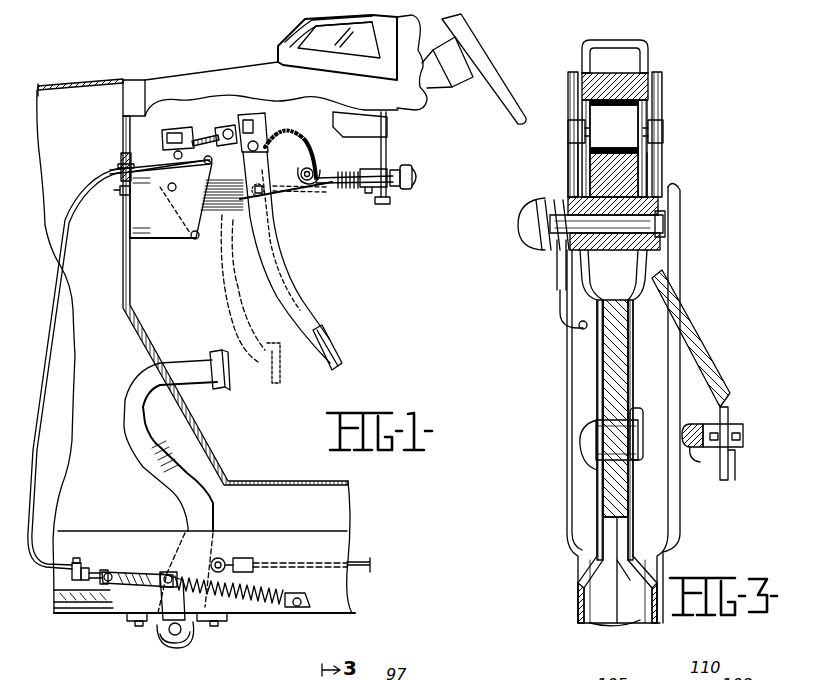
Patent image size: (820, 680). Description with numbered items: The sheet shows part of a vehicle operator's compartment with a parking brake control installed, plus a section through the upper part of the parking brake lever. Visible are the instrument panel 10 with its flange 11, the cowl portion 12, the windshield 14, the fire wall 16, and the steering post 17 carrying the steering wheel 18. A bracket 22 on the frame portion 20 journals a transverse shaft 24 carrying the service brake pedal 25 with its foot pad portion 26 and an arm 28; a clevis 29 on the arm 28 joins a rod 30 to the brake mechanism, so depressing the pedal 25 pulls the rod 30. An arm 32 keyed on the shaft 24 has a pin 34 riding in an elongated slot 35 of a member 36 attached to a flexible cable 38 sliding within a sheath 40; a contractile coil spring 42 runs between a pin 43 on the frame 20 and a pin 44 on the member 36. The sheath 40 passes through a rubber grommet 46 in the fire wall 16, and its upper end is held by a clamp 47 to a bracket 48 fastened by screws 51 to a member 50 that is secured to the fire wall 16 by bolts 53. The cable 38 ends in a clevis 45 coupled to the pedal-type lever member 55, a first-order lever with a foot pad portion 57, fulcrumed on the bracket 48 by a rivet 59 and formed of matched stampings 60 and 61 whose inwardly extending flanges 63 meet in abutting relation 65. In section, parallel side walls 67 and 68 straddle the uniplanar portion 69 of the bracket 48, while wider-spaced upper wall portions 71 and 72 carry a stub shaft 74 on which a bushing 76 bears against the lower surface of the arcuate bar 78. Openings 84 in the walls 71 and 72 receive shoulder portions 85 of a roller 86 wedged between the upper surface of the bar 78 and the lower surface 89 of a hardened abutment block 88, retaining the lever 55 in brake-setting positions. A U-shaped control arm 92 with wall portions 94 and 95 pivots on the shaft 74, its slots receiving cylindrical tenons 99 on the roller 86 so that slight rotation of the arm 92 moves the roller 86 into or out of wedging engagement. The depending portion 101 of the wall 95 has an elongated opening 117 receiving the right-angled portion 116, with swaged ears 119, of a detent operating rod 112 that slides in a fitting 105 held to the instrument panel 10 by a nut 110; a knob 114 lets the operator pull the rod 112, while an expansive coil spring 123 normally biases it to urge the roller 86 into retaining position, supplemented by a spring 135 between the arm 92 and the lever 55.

In FIG. 1, the instrument panel 10 is at (390, 199).
In FIG. 1, the flange 11 is at (384, 205).
In FIG. 1, the cowl portion 12 is at (228, 78).
In FIG. 1, the windshield 14 is at (305, 33).
In FIG. 1, the dashboard or fire wall 16 is at (130, 288).
In FIG. 1, the steering post 17 is at (428, 85).
In FIG. 1, the steering wheel 18 is at (468, 30).
In FIG. 1, the frame portion 20 is at (308, 531).
In FIG. 1, the bracket 22 is at (125, 613).
In FIG. 1, the shaft 24 is at (163, 636).
In FIG. 1, the service brake pedal 25 is at (123, 430).
In FIG. 1, the foot pad portion 26 is at (228, 392).
In FIG. 1, the arm 28 is at (225, 624).
In FIG. 1, the clevis 29 is at (240, 562).
In FIG. 1, the rod 30 is at (357, 565).
In FIG. 1, the arm 32 is at (192, 628).
In FIG. 1, the pin 34 is at (170, 572).
In FIG. 1, the elongated slot 35 is at (147, 573).
In FIG. 1, the member 36 is at (125, 572).
In FIG. 1, the flexible cable 38 is at (205, 135).
In FIG. 1, the sheath 40 is at (73, 381).
In FIG. 1, the contractile coil spring 42 is at (266, 594).
In FIG. 1, the pin 43 is at (303, 610).
In FIG. 1, the pin or member 44 is at (103, 570).
In FIG. 1, the clevis 45 is at (232, 128).
In FIG. 1, the rubber grommet 46 is at (121, 160).
In FIG. 1, the clamp 47 is at (178, 135).
In FIG. 1, the support or bracket 48 is at (220, 220).
In FIG. 1, the support or member 50 is at (170, 244).
In FIG. 1, the securing screws 51 is at (172, 183).
In FIG. 1, the bolts 53 is at (120, 197).
In FIG. 1, the lever member or construction 55 is at (272, 122).
In FIG. 3, the lever member or construction 55 is at (565, 580).
In FIG. 1, the foot pad portion 57 is at (336, 340).
In FIG. 1, the stub shaft or rivet 59 is at (264, 195).
In FIG. 3, the stub shaft or rivet 59 is at (603, 443).
In FIG. 3, the stamping or section 60 is at (578, 606).
In FIG. 3, the stamping or section 61 is at (658, 618).
In FIG. 3, the inwardly extending flanges 63 is at (598, 622).
In FIG. 3, the abutting relation 65 is at (622, 580).
In FIG. 3, the side wall 67 is at (597, 354).
In FIG. 3, the side wall 68 is at (634, 372).
In FIG. 3, the uniplanar portion 69 is at (612, 385).
In FIG. 3, the upper wall portion 71 is at (558, 270).
In FIG. 3, the upper wall portion 72 is at (650, 262).
In FIG. 3, the stub shaft or rivet 74 is at (665, 222).
In FIG. 3, the cylindrical sleeve or bushing 76 is at (650, 207).
In FIG. 1, the arcuately shaped bar 78 is at (279, 148).
In FIG. 3, the arcuately shaped bar 78 is at (630, 172).
In FIG. 3, the openings 84 is at (585, 107).
In FIG. 3, the shoulder portions 85 is at (580, 142).
In FIG. 3, the detent or roller 86 is at (636, 100).
In FIG. 3, the hardened abutment block 88 is at (628, 78).
In FIG. 3, the lower surface 89 is at (598, 92).
In FIG. 3, the control lever or arm 92 is at (696, 315).
In FIG. 3, the wall portion 94 is at (570, 181).
In FIG. 3, the wall portion 95 is at (652, 183).
In FIG. 3, the cylindrical tenons 99 is at (570, 132).
In FIG. 3, the depending arm or portion 101 is at (716, 378).
In FIG. 1, the fitting or member 105 is at (372, 170).
In FIG. 1, the securing nut 110 is at (402, 184).
In FIG. 1, the detent operating rod 112 is at (338, 190).
In FIG. 3, the detent operating rod 112 is at (698, 447).
In FIG. 1, the manipulating knob or button 114 is at (412, 172).
In FIG. 3, the bent portion 116 is at (740, 424).
In FIG. 3, the opening or slot 117 is at (735, 455).
In FIG. 3, the swaged projections or ears 119 is at (718, 426).
In FIG. 1, the expansive coil spring 123 is at (346, 188).
In FIG. 3, the spring 135 is at (560, 300).